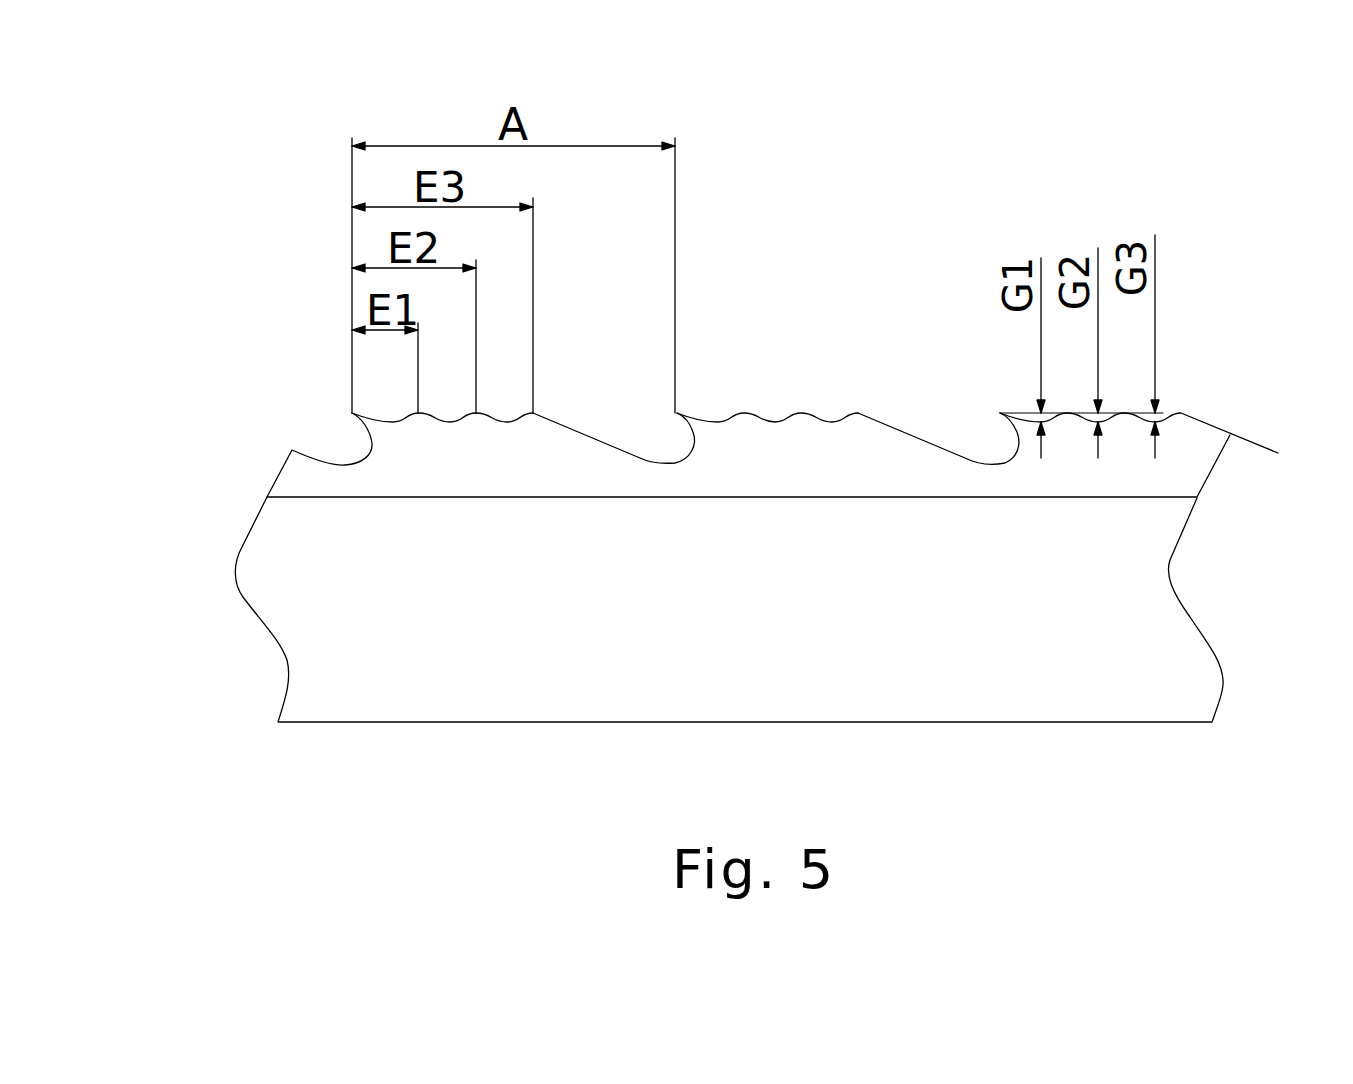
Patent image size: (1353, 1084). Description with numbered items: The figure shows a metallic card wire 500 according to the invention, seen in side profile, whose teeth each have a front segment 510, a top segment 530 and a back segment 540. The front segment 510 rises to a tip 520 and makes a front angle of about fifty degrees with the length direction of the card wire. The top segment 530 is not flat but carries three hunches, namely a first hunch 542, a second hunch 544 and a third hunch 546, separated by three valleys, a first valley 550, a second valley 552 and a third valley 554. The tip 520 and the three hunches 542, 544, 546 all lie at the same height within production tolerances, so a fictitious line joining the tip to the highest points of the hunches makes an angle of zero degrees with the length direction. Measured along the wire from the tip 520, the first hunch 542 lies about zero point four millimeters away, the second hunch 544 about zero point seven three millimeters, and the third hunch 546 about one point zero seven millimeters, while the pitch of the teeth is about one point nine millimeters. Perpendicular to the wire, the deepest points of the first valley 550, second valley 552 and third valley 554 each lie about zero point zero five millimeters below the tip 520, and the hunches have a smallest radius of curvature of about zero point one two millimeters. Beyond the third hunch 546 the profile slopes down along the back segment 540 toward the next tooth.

The card wire 500 is at (1202, 173).
The front segment 510 is at (352, 433).
The tip 520 is at (403, 504).
The top segment 530 is at (785, 362).
The back segment 540 is at (910, 435).
The first hunch 542 is at (419, 413).
The second hunch 544 is at (476, 413).
The third hunch 546 is at (533, 413).
The first valley 550 is at (393, 422).
The second valley 552 is at (450, 422).
The third valley 554 is at (507, 422).